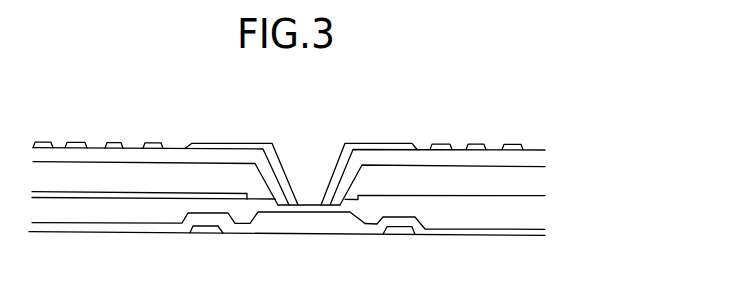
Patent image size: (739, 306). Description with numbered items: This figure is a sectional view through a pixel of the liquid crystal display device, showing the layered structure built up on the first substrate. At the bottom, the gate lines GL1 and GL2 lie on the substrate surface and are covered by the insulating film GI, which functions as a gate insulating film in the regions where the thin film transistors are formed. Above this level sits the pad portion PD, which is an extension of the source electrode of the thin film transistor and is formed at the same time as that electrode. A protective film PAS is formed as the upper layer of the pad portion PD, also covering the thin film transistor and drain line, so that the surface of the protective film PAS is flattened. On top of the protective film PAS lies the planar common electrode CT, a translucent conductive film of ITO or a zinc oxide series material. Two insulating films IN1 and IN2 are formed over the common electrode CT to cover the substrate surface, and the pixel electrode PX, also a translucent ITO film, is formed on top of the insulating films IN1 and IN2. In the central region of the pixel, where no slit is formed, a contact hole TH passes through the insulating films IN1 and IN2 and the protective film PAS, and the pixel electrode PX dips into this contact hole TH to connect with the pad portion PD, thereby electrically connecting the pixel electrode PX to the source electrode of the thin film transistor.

The pixel electrode PX is at (278, 138).
The first insulating film IN1 is at (291, 139).
The second insulating film IN2 is at (289, 145).
The contact hole TH is at (309, 143).
The common electrode CT is at (288, 243).
The protective film PAS is at (288, 253).
The pad portion PD is at (307, 254).
The insulating film GI is at (287, 260).
The gate line GL1 is at (195, 259).
The gate line GL2 is at (387, 261).